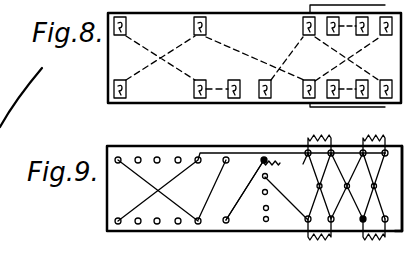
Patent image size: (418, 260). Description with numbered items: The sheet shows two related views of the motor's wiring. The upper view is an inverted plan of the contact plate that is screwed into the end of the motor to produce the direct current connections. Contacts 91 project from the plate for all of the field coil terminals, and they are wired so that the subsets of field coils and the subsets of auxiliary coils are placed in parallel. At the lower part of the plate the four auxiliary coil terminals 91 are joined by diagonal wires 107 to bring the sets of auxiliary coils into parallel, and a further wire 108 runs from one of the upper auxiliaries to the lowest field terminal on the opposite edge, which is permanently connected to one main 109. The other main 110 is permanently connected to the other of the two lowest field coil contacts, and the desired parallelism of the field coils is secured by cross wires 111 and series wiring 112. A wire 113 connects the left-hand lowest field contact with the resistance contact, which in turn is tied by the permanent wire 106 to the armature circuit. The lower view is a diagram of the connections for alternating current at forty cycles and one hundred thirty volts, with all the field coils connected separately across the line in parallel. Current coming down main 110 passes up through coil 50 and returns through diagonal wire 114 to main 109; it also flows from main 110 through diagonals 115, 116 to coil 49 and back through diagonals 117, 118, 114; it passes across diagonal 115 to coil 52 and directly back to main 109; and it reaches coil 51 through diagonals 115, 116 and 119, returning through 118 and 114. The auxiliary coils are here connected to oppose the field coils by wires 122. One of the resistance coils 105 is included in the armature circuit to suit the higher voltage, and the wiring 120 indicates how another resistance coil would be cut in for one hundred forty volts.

In FIG. 8, the contacts 91 is at (114, 91).
In FIG. 8, the diagonal wires 107 is at (153, 67).
In FIG. 8, the wire 108 is at (259, 58).
In FIG. 8, the wire 113 is at (294, 50).
In FIG. 8, the cross wires 111 is at (330, 46).
In FIG. 8, the series wiring 112 is at (347, 28).
In FIG. 8, the main 109 is at (385, 107).
In FIG. 9, the main 109 is at (401, 232).
In FIG. 8, the main 110 is at (385, 5).
In FIG. 9, the main 110 is at (402, 146).
In FIG. 9, the wires 122 is at (244, 152).
In FIG. 9, the resistance coil 105 is at (263, 162).
In FIG. 9, the wire 106 is at (247, 191).
In FIG. 9, the diagonal wire 115 is at (289, 164).
In FIG. 9, the wiring 120 is at (267, 194).
In FIG. 9, the diagonal wire 114 is at (318, 200).
In FIG. 9, the diagonal wire 118 is at (346, 186).
In FIG. 9, the diagonal wire 116 is at (353, 216).
In FIG. 9, the diagonal wire 117 is at (398, 170).
In FIG. 9, the diagonal wire 119 is at (398, 201).
In FIG. 9, the field coil 50 is at (304, 138).
In FIG. 9, the field coil 49 is at (362, 137).
In FIG. 9, the field coil 52 is at (309, 237).
In FIG. 9, the field coil 51 is at (363, 238).